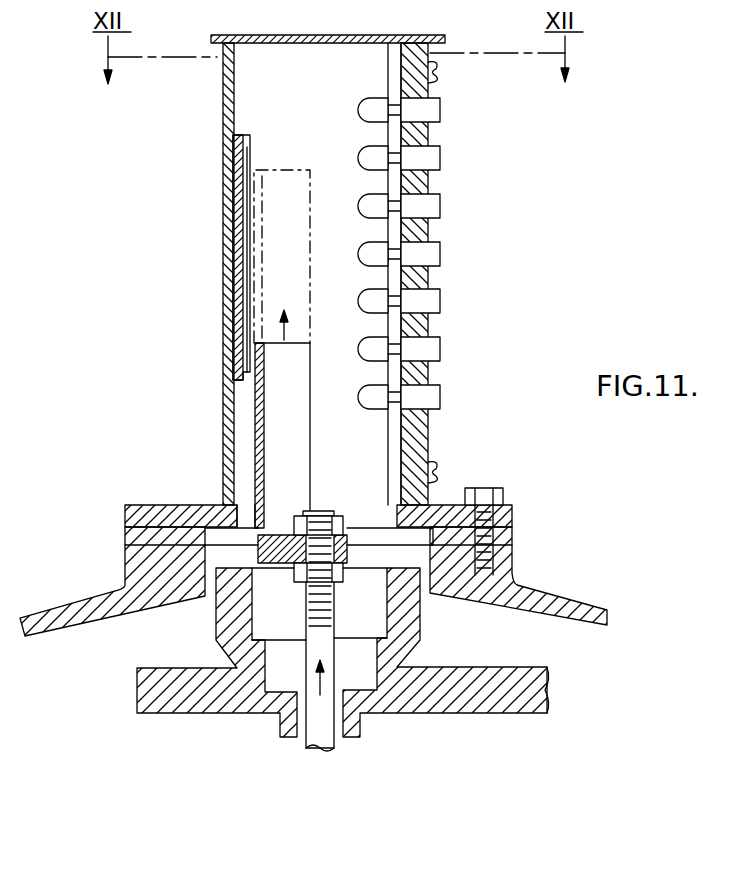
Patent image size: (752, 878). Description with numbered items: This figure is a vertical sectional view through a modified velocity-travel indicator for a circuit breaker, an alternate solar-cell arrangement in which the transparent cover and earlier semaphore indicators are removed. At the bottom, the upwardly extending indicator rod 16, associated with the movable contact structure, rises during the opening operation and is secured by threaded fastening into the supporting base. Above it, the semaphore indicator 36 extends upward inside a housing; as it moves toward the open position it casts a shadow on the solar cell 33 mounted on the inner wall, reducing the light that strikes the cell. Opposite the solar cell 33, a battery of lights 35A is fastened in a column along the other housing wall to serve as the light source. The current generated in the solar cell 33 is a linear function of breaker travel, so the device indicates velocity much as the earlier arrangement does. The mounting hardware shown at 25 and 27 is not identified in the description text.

The indicator rod 16 is at (318, 752).
The support bracket 25 is at (426, 574).
The mounting flange 27 is at (563, 594).
The solar cell 33 is at (250, 152).
The battery of lights 35A is at (509, 287).
The semaphore indicator 36 is at (255, 452).